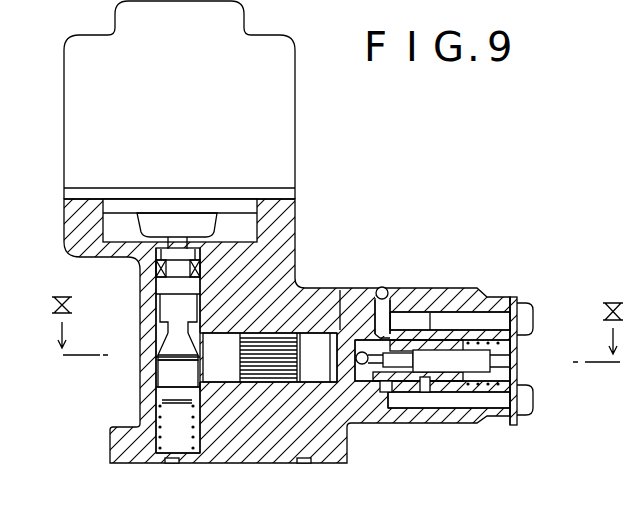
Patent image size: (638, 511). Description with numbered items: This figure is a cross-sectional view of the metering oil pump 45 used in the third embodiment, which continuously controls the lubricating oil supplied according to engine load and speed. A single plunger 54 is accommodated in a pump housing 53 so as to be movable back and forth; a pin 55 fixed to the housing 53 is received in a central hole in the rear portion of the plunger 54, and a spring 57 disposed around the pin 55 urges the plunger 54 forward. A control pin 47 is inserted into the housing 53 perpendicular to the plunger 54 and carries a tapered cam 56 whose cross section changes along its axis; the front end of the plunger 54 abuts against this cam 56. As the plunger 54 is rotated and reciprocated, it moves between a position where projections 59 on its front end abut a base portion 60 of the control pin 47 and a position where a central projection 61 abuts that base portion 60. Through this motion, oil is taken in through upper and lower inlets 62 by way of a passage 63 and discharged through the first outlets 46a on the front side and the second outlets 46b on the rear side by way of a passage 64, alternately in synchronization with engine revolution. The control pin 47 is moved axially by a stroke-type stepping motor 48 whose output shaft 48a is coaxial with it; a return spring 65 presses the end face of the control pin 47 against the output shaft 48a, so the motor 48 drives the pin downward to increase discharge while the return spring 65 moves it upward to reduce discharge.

The metering oil pump 45 is at (546, 237).
The first outlets 46a is at (343, 318).
The second outlets 46b is at (435, 320).
The control pin 47 is at (165, 305).
The stepping motor 48 is at (78, 100).
The output shaft 48a is at (178, 240).
The pump housing 53 is at (272, 455).
The plunger 54 is at (317, 377).
The pin 55 is at (483, 362).
The tapered cam 56 is at (162, 337).
The spring 57 is at (488, 380).
The projections 59 is at (200, 385).
The base portion 60 is at (157, 396).
The central projection 61 is at (175, 372).
The inlets 62 is at (392, 340).
The passage 63 is at (378, 343).
The passage 64 is at (428, 390).
The return spring 65 is at (160, 437).